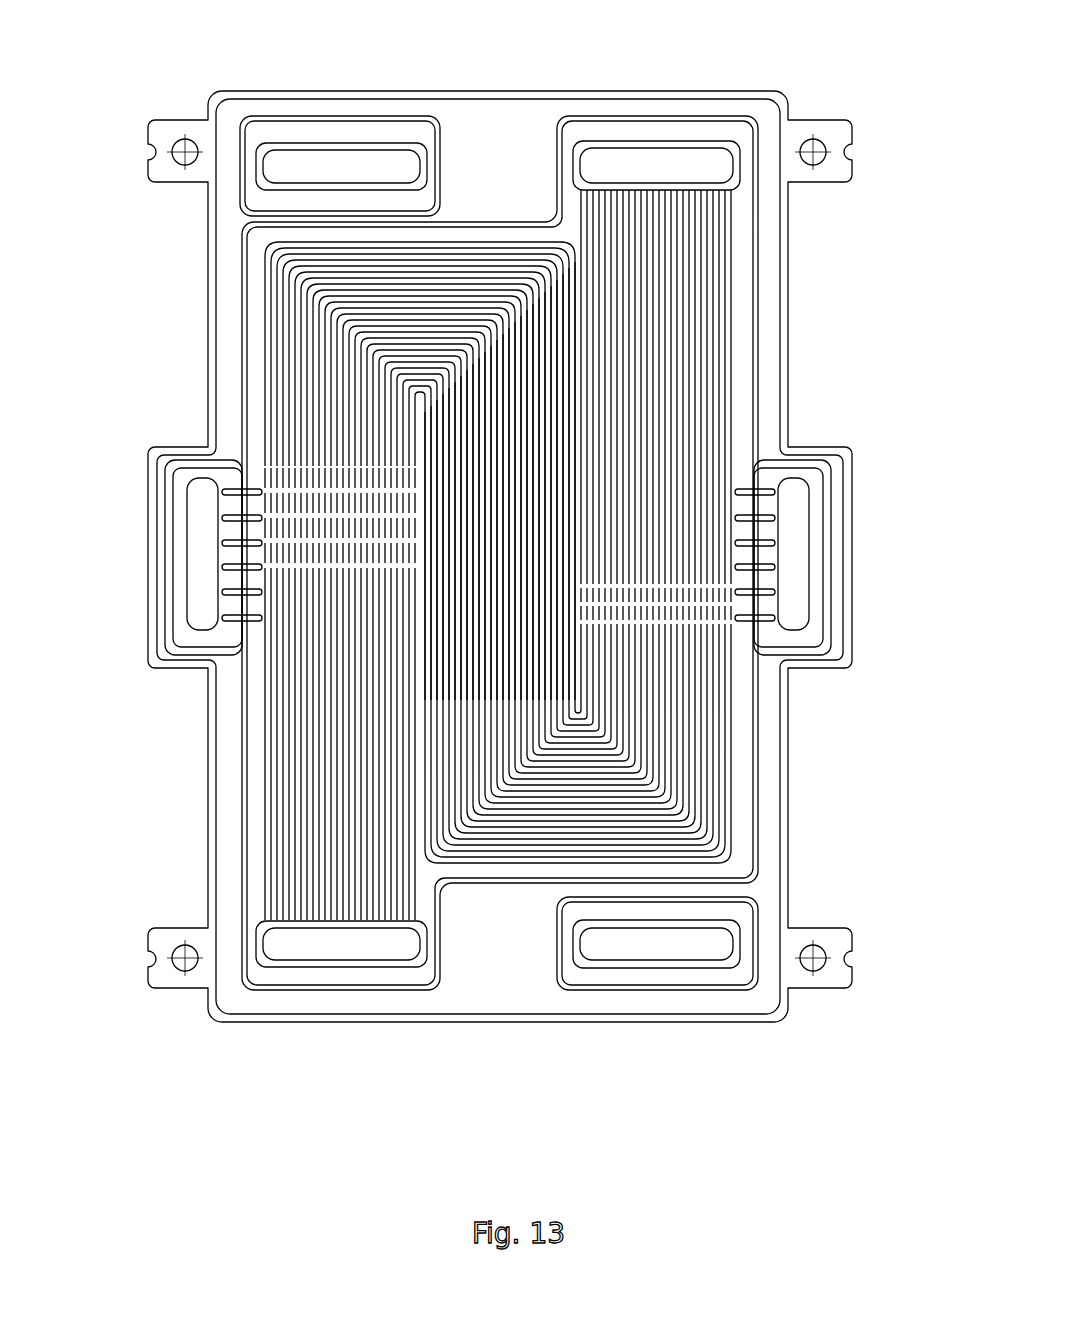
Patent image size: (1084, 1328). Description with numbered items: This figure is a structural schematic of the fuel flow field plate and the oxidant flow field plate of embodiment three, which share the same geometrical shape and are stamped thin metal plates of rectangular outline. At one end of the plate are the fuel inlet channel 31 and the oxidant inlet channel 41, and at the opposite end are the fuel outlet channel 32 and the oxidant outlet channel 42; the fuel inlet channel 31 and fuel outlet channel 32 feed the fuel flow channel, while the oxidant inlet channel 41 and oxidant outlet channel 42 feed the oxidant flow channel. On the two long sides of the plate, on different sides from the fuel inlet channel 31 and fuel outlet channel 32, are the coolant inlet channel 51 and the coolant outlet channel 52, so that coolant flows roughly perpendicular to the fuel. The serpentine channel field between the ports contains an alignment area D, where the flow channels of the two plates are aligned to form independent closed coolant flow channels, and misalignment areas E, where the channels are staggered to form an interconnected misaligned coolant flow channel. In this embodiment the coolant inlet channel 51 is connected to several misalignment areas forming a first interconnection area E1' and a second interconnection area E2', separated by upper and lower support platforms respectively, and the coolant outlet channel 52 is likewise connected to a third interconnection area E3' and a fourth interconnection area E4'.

The oxidant inlet channel 41 is at (310, 163).
The fuel inlet channel 31 is at (663, 165).
The fuel outlet channel 32 is at (340, 945).
The oxidant outlet channel 42 is at (650, 940).
The coolant inlet channel 51 is at (195, 498).
The coolant outlet channel 52 is at (800, 521).
The alignment area D is at (485, 448).
The misalignment area E is at (368, 548).
The first interconnection area E1' is at (233, 512).
The second interconnection area E2' is at (238, 622).
The third interconnection area E3' is at (742, 668).
The fourth interconnection area E4' is at (750, 380).